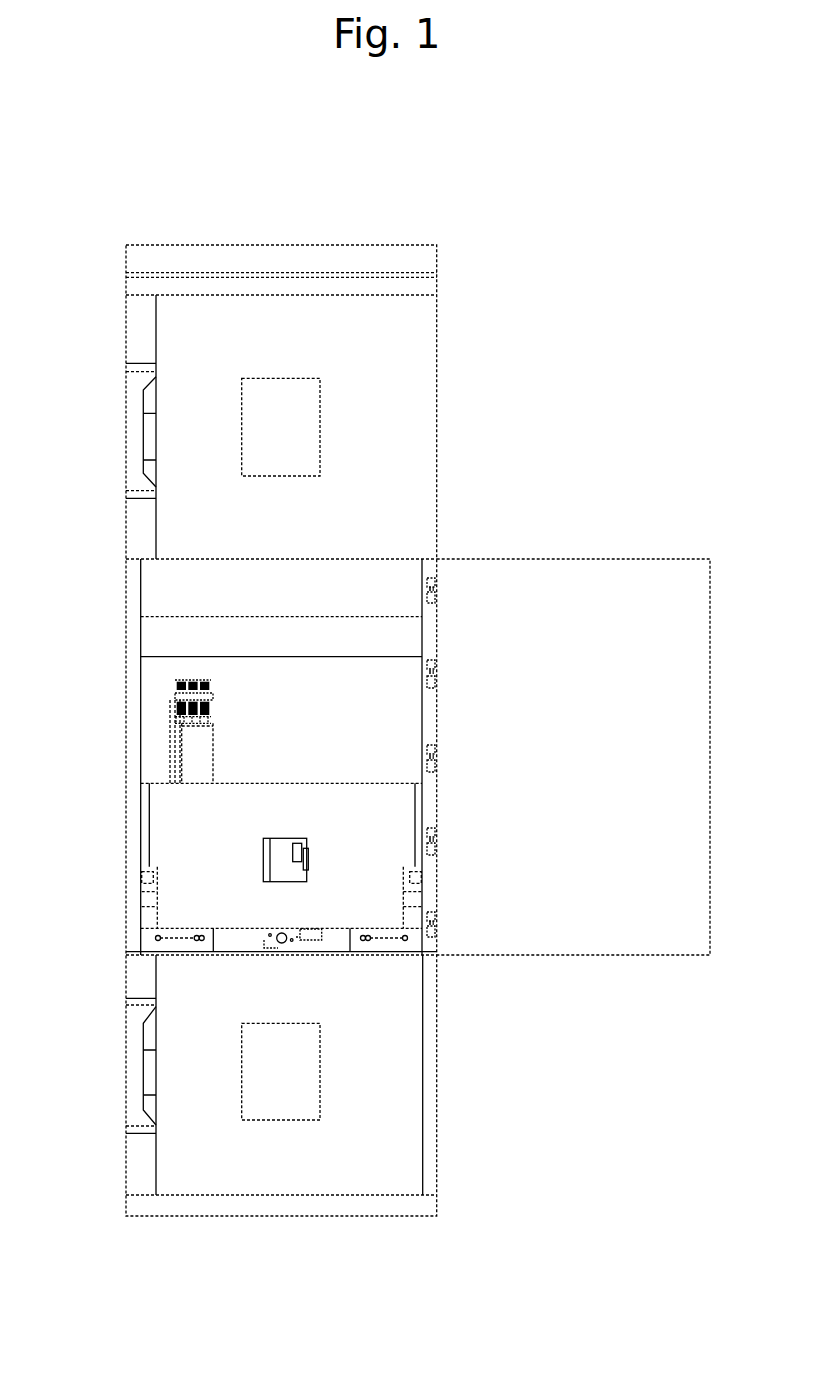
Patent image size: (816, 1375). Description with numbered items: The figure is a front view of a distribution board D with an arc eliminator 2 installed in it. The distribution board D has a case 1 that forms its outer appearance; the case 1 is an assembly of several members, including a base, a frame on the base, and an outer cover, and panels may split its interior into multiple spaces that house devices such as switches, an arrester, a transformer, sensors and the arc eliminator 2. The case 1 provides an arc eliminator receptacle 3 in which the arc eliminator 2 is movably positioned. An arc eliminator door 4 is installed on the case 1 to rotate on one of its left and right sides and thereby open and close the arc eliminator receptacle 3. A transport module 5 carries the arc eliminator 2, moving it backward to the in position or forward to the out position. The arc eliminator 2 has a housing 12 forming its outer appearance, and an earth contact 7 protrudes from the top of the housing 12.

The case 1 is at (108, 402).
The distribution board D is at (463, 263).
The arc eliminator 2 is at (175, 847).
The arc eliminator receptacle 3 is at (158, 748).
The arc eliminator door 4 is at (571, 575).
The transport module 5 is at (333, 943).
The earth contact 7 is at (157, 692).
The housing 12 is at (157, 797).